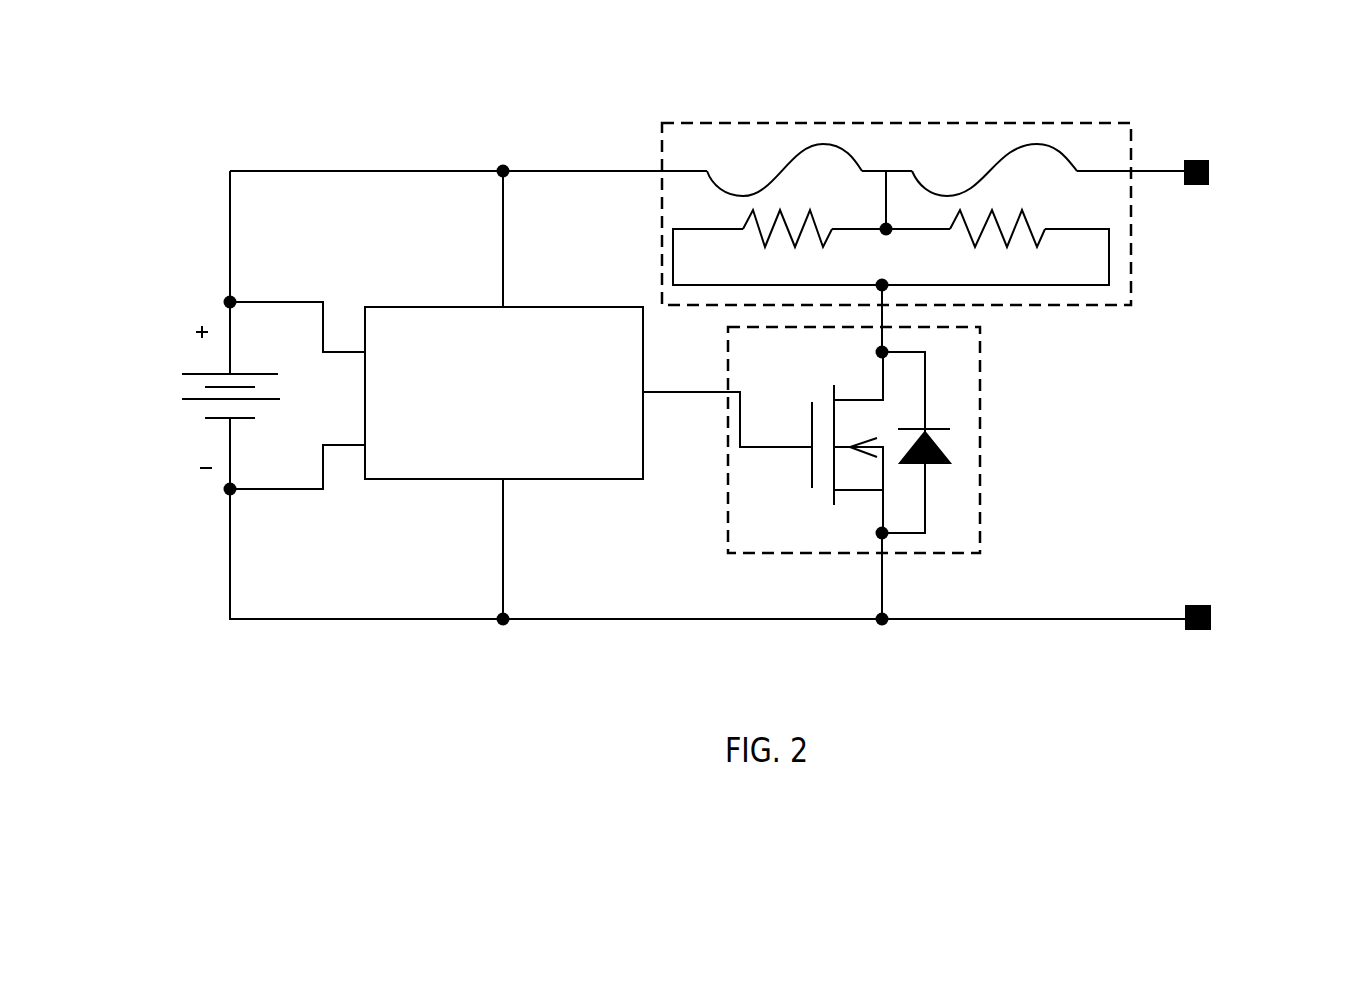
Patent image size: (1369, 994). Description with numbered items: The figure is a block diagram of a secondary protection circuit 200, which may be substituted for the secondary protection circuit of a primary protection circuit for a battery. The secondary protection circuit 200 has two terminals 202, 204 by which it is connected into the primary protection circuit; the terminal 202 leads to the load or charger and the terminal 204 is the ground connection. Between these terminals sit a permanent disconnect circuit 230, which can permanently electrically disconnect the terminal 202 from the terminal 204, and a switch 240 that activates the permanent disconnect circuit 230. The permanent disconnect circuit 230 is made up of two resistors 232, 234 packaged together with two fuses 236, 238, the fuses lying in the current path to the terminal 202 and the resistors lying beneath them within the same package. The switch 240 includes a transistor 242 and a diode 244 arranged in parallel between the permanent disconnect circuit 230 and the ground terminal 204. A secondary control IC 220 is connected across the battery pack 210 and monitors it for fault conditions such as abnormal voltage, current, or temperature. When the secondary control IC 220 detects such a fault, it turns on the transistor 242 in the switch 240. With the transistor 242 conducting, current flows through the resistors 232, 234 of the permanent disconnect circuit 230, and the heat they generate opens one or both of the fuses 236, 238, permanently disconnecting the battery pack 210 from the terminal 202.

The secondary protection circuit 200 is at (705, 355).
The terminal 202 is at (1192, 185).
The terminal 204 is at (1185, 608).
The battery pack 210 is at (190, 373).
The secondary control IC 220 is at (588, 393).
The permanent disconnect circuit 230 is at (862, 201).
The resistor 232 is at (763, 236).
The resistor 234 is at (1027, 227).
The fuse 236 is at (857, 160).
The fuse 238 is at (1018, 145).
The switch 240 is at (862, 440).
The transistor 242 is at (802, 472).
The diode 244 is at (930, 463).